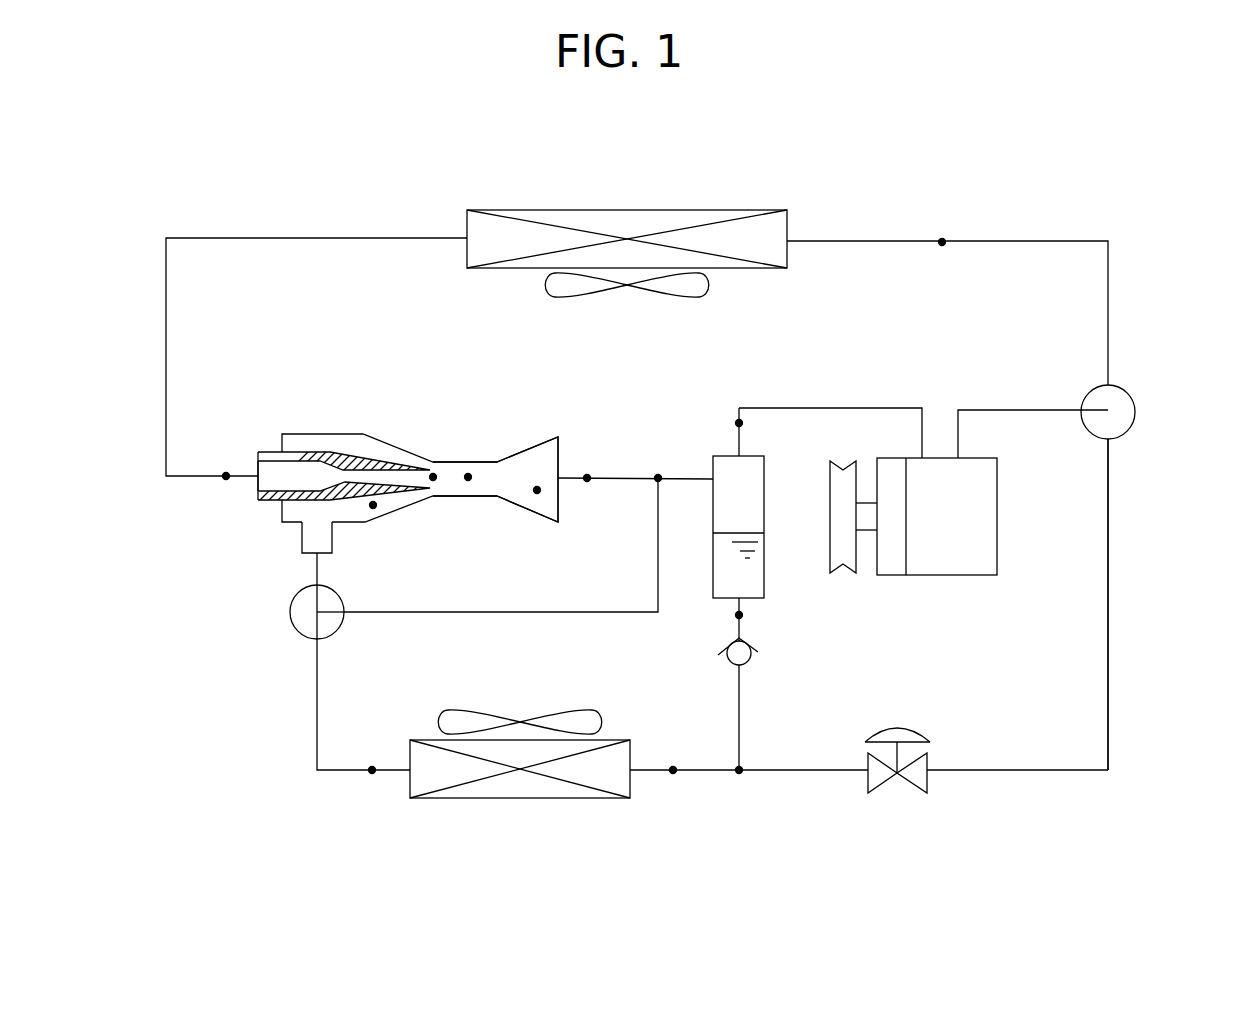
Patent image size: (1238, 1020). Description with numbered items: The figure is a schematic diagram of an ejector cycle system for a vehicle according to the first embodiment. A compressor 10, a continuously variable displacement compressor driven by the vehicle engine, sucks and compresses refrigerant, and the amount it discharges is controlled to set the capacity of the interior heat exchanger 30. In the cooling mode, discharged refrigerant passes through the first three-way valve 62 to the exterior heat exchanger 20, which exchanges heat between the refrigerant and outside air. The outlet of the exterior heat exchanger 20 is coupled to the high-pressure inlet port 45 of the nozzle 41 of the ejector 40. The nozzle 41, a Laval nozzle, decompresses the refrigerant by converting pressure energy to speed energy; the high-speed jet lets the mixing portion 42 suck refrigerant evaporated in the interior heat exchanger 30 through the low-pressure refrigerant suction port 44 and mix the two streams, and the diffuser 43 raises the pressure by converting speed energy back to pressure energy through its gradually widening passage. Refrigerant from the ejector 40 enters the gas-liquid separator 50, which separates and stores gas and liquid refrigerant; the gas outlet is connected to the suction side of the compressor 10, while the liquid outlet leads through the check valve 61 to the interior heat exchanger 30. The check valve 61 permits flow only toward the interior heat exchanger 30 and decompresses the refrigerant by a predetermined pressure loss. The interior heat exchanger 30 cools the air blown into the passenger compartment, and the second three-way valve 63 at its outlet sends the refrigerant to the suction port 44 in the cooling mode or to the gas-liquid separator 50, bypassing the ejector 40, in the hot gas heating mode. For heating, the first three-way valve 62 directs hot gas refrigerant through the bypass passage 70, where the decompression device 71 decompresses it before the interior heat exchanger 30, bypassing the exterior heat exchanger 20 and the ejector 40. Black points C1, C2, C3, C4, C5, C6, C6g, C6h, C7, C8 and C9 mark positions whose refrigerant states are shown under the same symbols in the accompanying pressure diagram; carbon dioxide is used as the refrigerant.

The compressor 10 is at (998, 507).
The exterior heat exchanger 20 is at (692, 210).
The interior heat exchanger 30 is at (617, 740).
The ejector 40 is at (400, 448).
The nozzle 41 is at (345, 455).
The mixing portion 42 is at (478, 464).
The diffuser 43 is at (530, 448).
The low-pressure refrigerant suction port 44 is at (305, 545).
The high-pressure inlet port 45 is at (258, 475).
The gas-liquid separator 50 is at (764, 468).
The check valve 61 is at (748, 648).
The first three-way valve 62 is at (1133, 393).
The second three-way valve 63 is at (292, 632).
The bypass passage 70 is at (1108, 617).
The decompression device 71 is at (930, 760).
The refrigerant state point C1 is at (942, 242).
The refrigerant state point C2 is at (226, 476).
The refrigerant state point C3 is at (433, 477).
The refrigerant state point C4 is at (468, 477).
The refrigerant state point C5 is at (537, 490).
The refrigerant state point C6 is at (587, 478).
The refrigerant state point C6g is at (739, 423).
The refrigerant state point C6h is at (745, 613).
The refrigerant state point C7 is at (673, 770).
The refrigerant state point C8 is at (372, 770).
The refrigerant state point C9 is at (373, 505).